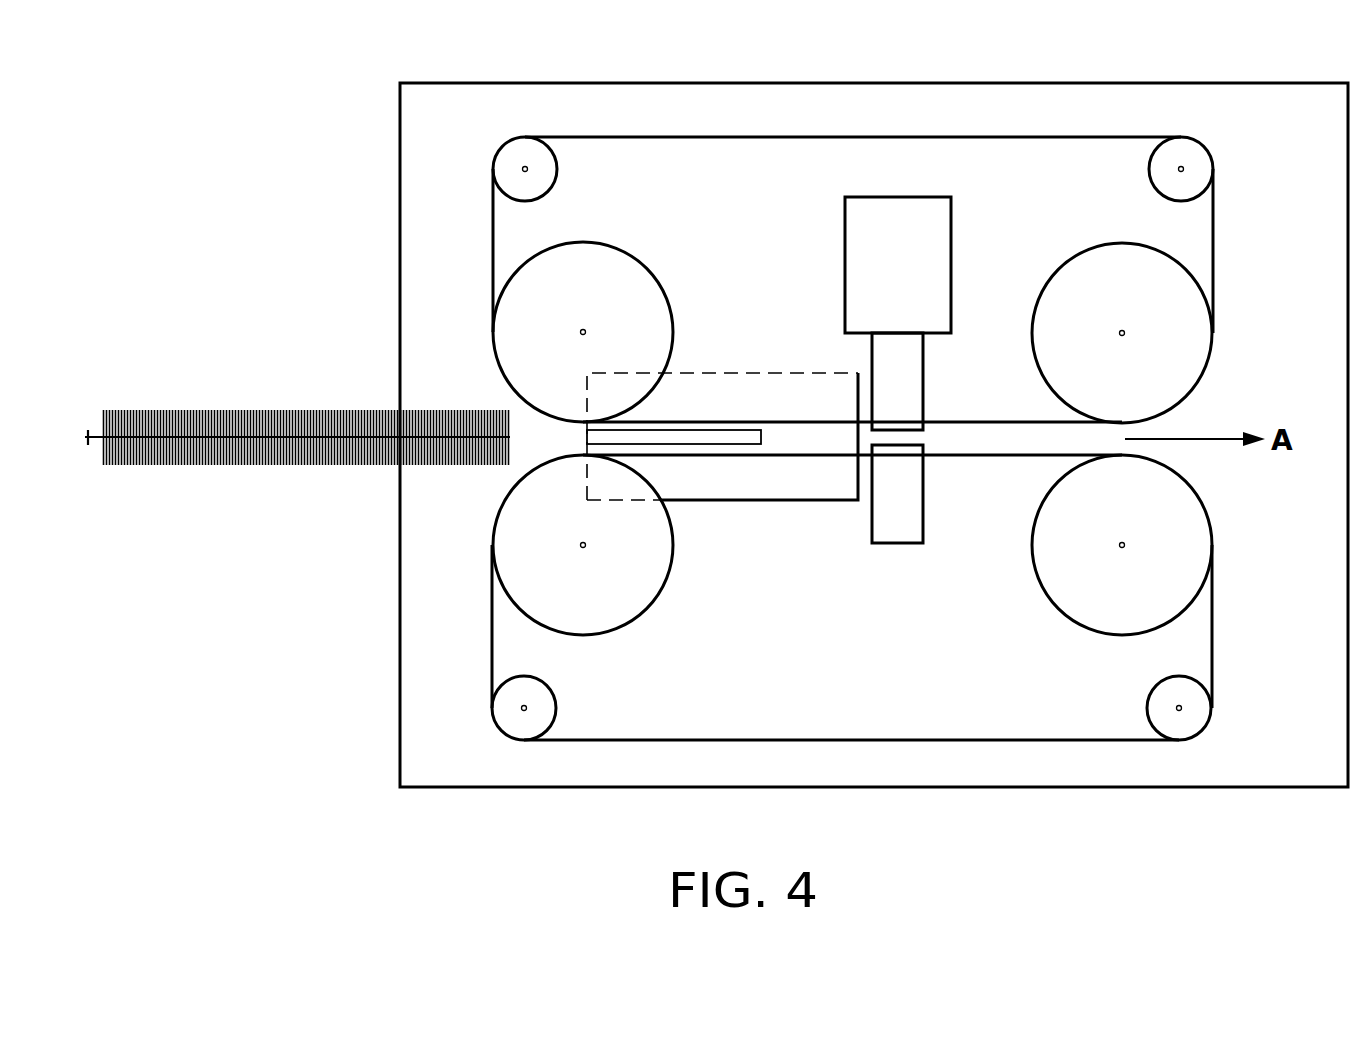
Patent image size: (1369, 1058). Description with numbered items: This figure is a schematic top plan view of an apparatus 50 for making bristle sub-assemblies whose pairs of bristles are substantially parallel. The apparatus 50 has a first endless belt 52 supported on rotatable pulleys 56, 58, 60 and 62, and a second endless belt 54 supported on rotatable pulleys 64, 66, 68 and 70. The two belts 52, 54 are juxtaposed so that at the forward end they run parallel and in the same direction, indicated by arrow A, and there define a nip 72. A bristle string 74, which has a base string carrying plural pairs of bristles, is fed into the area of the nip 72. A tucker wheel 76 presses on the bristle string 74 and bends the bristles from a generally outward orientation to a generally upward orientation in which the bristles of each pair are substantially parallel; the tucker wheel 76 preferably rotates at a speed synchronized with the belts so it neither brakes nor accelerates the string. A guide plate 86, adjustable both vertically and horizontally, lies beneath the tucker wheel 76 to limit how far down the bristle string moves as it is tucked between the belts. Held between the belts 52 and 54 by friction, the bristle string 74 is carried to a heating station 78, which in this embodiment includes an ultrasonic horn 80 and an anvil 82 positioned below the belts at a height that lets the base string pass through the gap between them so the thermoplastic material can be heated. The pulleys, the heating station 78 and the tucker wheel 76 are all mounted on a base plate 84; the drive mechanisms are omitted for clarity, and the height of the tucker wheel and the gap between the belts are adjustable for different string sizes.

The apparatus 50 is at (345, 156).
The first endless belt 52 is at (621, 150).
The second endless belt 54 is at (663, 740).
The rotatable pulley 56 is at (521, 327).
The rotatable pulley 58 is at (1183, 370).
The rotatable pulley 60 is at (515, 152).
The rotatable pulley 62 is at (1191, 150).
The rotatable pulley 64 is at (520, 520).
The rotatable pulley 66 is at (505, 718).
The rotatable pulley 68 is at (1183, 505).
The rotatable pulley 70 is at (1195, 717).
The nip 72 is at (552, 430).
The bristle string 74 is at (190, 482).
The tucker wheel 76 is at (712, 433).
The heating station 78 is at (872, 700).
The ultrasonic horn 80 is at (923, 392).
The anvil 82 is at (923, 480).
The base plate 84 is at (1240, 82).
The guide plate 86 is at (775, 502).